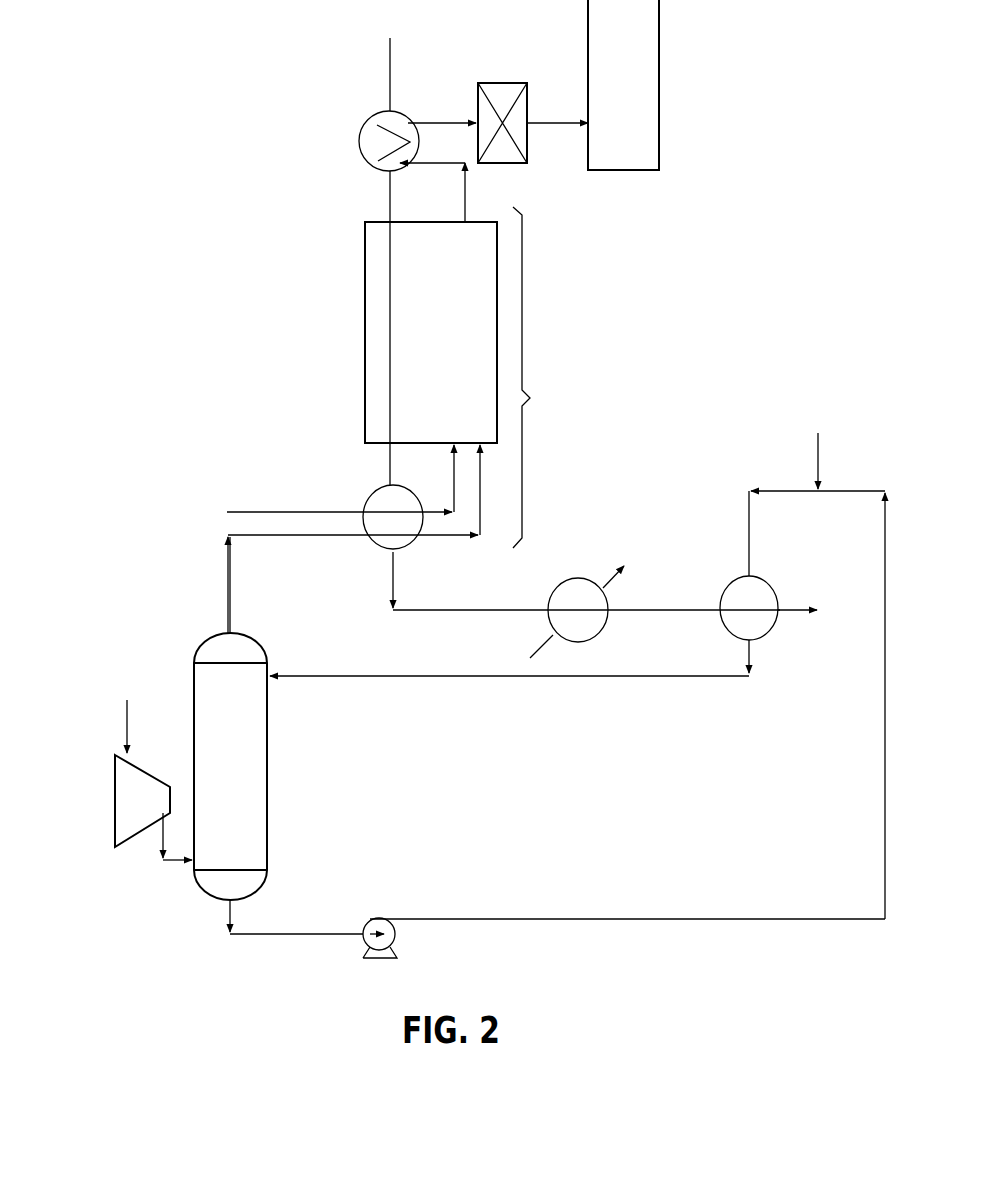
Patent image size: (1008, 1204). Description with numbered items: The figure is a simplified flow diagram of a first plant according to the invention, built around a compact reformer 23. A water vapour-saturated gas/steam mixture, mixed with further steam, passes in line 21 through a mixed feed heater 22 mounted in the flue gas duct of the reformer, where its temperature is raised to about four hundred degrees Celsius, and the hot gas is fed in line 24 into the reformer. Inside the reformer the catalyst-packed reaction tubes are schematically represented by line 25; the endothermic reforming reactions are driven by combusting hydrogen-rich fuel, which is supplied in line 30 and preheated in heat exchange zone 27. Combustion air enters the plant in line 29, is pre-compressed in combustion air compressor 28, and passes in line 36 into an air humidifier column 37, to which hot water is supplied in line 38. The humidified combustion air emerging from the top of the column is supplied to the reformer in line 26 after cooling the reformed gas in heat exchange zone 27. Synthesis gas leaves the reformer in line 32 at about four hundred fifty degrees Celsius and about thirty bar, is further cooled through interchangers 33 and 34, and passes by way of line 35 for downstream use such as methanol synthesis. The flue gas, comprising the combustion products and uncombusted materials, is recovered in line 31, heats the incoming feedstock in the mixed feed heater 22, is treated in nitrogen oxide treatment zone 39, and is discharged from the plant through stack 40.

The line 21 is at (388, 64).
The mixed feed heater 22 is at (360, 140).
The compact reformer 23 is at (552, 400).
The line 24 is at (388, 193).
The reaction tubes 25 is at (390, 325).
The combustion air line 26 is at (310, 537).
The heat exchange zone 27 is at (372, 492).
The combustion air compressor 28 is at (112, 813).
The line 29 is at (127, 726).
The line 30 is at (250, 512).
The flue gas line 31 is at (465, 197).
The line 32 is at (392, 578).
The interchanger 33 is at (578, 578).
The interchanger 34 is at (770, 583).
The line 35 is at (787, 610).
The line 36 is at (173, 862).
The air humidifier column 37 is at (267, 800).
The line 38 is at (470, 677).
The nitrogen oxide treatment zone 39 is at (507, 82).
The stack 40 is at (647, 67).